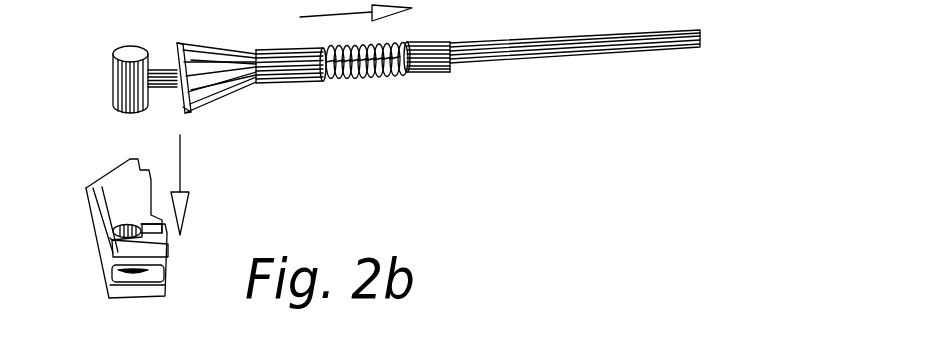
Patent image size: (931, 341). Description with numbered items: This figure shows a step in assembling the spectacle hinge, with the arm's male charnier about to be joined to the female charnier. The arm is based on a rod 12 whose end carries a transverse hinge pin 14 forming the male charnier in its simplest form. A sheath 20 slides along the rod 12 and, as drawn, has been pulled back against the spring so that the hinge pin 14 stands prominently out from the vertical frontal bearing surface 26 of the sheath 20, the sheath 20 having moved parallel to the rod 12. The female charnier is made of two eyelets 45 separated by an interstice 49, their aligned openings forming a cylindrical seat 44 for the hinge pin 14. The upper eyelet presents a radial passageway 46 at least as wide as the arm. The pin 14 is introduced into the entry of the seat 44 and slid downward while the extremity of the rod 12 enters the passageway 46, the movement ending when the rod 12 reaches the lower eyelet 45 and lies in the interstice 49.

The rod 12 is at (163, 68).
The hinge pin 14 is at (117, 48).
The sheath 20 is at (222, 48).
The bearing surface 26 is at (183, 107).
The cylindrical seat 44 is at (118, 219).
The eyelets 45 is at (135, 293).
The radial passageway 46 is at (146, 221).
The interstice 49 is at (153, 273).